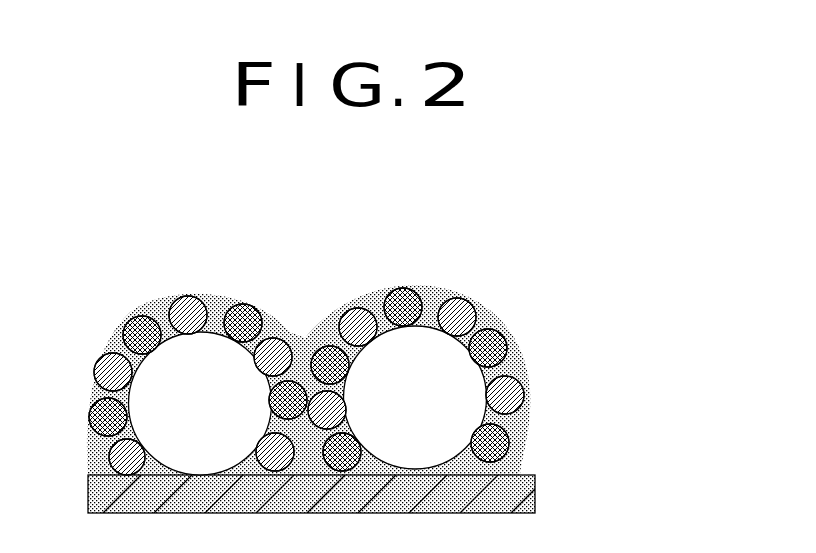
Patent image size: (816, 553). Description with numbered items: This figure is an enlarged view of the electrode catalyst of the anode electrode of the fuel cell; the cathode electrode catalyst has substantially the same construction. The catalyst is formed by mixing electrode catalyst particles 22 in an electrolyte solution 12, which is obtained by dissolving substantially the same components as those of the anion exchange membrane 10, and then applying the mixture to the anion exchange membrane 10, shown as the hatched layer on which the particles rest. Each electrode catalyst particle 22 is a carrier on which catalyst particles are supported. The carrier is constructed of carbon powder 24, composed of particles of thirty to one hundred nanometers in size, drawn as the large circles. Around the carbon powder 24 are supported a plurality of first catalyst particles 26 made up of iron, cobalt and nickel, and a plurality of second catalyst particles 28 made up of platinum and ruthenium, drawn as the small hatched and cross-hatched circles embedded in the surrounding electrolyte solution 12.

The anion exchange membrane 10 is at (535, 485).
The electrolyte solution 12 is at (374, 362).
The electrode catalyst particles 22 is at (485, 379).
The carbon powder 24 is at (453, 412).
The first catalyst particles 26 is at (523, 387).
The second catalyst particles 28 is at (510, 342).